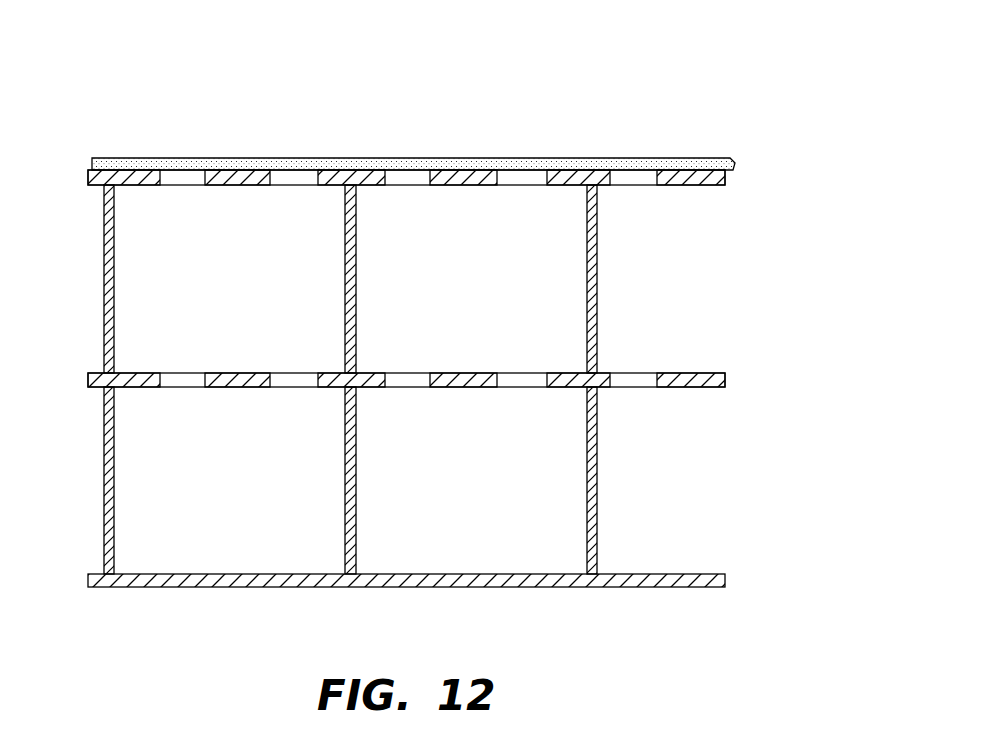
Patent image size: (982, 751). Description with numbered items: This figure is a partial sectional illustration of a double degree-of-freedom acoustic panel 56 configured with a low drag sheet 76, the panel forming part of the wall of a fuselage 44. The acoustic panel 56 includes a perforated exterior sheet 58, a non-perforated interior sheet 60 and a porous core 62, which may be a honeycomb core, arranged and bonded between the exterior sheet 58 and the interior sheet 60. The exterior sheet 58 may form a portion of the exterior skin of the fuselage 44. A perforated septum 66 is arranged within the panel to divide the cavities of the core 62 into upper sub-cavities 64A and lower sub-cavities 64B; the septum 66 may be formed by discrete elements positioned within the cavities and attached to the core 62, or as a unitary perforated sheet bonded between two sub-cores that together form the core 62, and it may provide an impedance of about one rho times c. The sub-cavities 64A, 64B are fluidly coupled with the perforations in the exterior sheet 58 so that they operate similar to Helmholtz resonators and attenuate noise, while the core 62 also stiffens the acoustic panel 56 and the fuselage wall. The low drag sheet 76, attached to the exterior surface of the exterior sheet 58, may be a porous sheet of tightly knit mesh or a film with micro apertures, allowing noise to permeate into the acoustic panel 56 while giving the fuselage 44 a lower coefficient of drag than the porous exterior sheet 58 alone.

The acoustic panel 56 is at (679, 98).
The fuselage 44 is at (398, 371).
The perforated exterior sheet 58 is at (88, 178).
The interior sheet 60 is at (86, 580).
The porous core 62 is at (118, 294).
The sub-cavities 64A is at (267, 317).
The sub-cavities 64B is at (268, 504).
The perforated septum 66 is at (185, 172).
The low drag sheet 76 is at (733, 165).